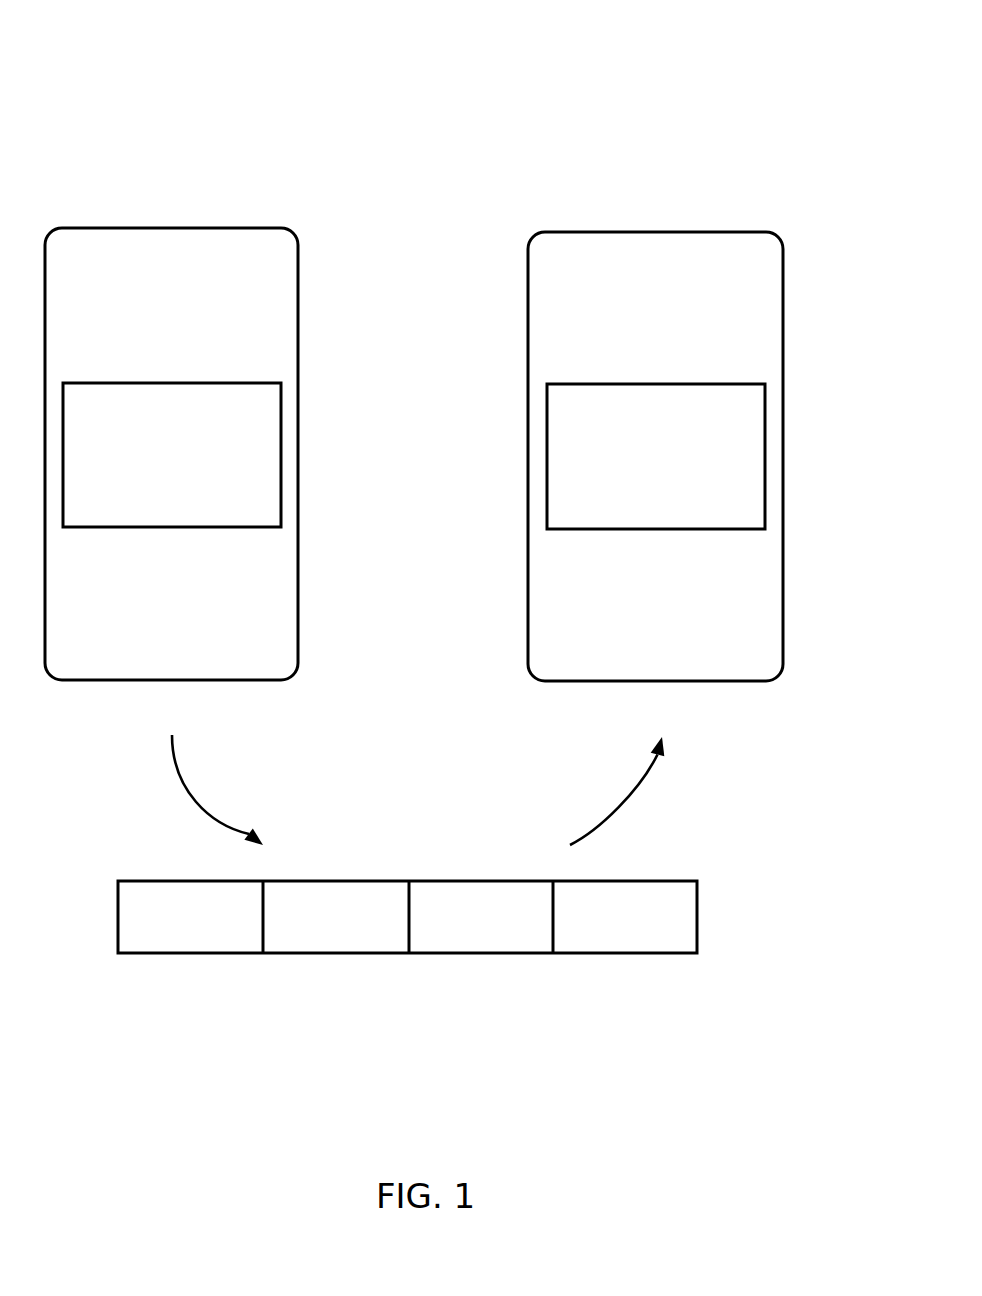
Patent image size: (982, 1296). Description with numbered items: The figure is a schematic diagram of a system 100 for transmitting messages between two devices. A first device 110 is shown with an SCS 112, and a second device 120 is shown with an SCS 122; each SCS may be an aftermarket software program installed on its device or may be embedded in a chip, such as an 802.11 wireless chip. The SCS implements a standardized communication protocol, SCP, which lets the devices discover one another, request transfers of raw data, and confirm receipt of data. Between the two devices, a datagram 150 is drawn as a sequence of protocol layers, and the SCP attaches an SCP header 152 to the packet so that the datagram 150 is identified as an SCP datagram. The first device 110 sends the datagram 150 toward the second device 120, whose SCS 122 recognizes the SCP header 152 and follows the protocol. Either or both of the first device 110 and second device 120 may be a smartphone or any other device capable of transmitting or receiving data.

The system for transmitting messages 100 is at (519, 56).
The first device 110 is at (245, 228).
The SCS 112 is at (281, 452).
The second device 120 is at (728, 232).
The SCS 122 is at (765, 453).
The datagram 150 is at (486, 1065).
The SCP header 152 is at (337, 953).